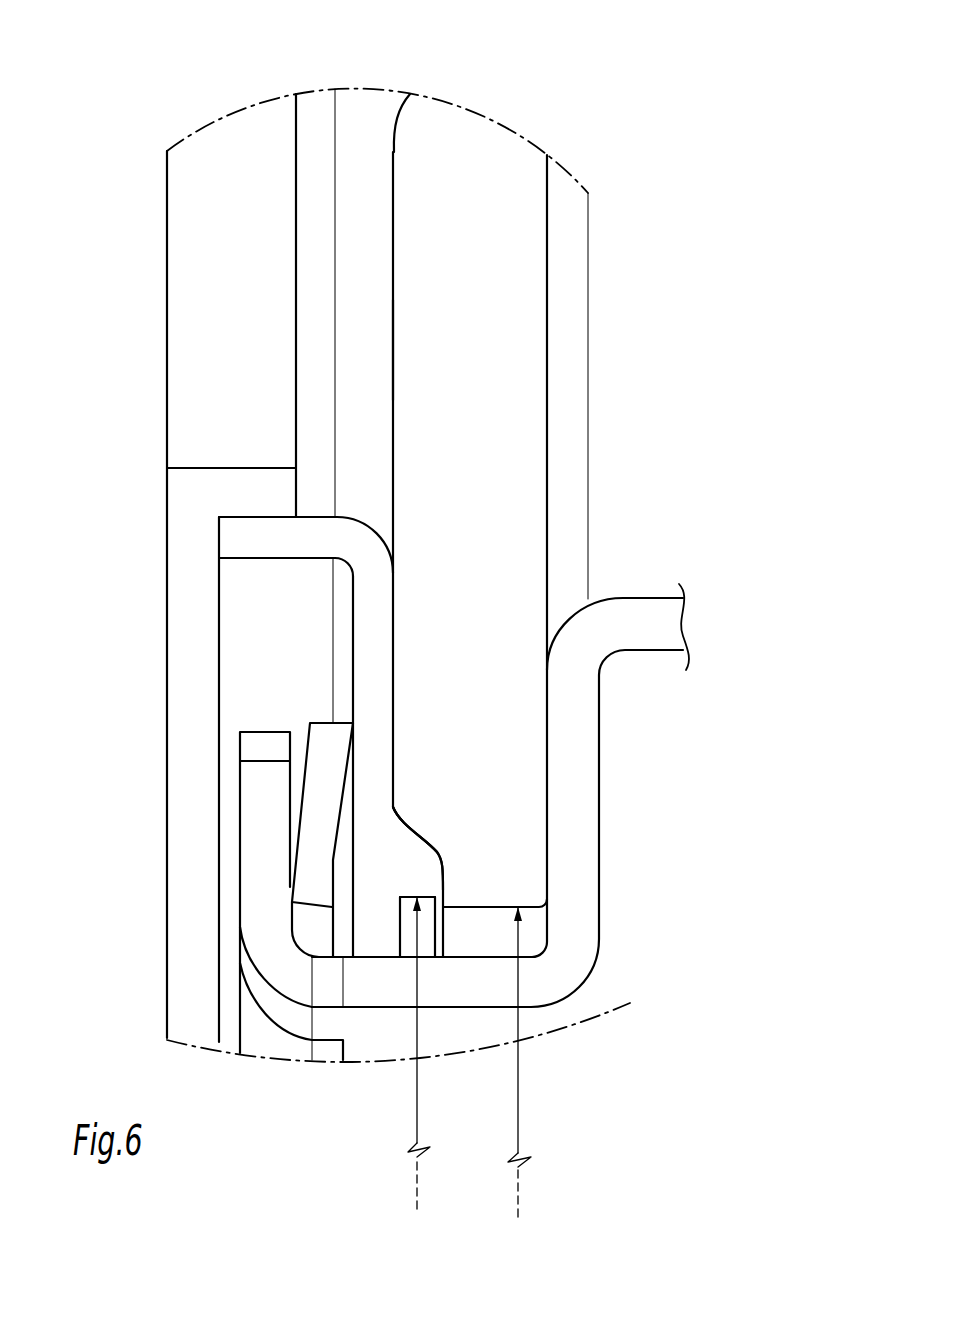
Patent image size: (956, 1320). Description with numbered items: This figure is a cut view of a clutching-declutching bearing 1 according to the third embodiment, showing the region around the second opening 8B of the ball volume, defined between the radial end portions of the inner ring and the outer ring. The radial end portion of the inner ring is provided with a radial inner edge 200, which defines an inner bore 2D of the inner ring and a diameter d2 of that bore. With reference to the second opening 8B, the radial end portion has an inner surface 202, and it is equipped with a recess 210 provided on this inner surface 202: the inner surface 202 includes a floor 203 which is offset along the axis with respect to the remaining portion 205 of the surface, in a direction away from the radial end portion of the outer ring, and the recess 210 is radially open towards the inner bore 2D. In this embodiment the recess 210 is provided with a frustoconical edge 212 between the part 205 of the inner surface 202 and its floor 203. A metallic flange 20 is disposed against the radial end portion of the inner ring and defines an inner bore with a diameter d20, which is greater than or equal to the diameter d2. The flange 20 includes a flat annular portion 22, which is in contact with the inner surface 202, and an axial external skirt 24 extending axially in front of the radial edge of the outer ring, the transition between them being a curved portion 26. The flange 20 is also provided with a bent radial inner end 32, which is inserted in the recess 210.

The bearing 1 is at (618, 153).
The second opening 8B is at (318, 385).
The inner surface 202 is at (711, 249).
The remaining portion of inner surface 205 is at (392, 347).
The floor 203 is at (432, 888).
The metallic flange 20 is at (47, 578).
The axial external skirt 24 is at (240, 537).
The curved portion 26 is at (367, 565).
The flat annular portion 22 is at (372, 655).
The bent radial inner end 32 is at (383, 872).
The recess 210 is at (398, 836).
The frustoconical edge 212 is at (417, 855).
The radial inner edge 200 is at (490, 908).
The inner bore 2D is at (382, 1027).
The diameter of flange inner bore d20 is at (411, 1055).
The diameter of inner bore d2 is at (511, 1062).